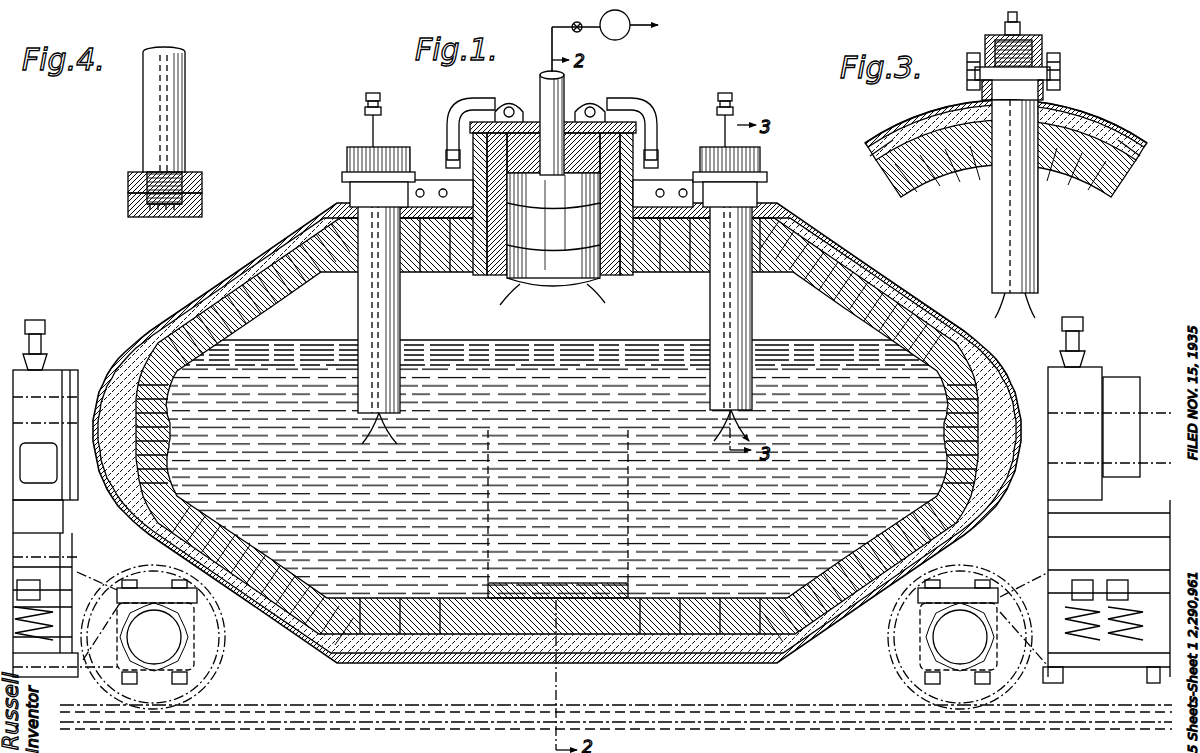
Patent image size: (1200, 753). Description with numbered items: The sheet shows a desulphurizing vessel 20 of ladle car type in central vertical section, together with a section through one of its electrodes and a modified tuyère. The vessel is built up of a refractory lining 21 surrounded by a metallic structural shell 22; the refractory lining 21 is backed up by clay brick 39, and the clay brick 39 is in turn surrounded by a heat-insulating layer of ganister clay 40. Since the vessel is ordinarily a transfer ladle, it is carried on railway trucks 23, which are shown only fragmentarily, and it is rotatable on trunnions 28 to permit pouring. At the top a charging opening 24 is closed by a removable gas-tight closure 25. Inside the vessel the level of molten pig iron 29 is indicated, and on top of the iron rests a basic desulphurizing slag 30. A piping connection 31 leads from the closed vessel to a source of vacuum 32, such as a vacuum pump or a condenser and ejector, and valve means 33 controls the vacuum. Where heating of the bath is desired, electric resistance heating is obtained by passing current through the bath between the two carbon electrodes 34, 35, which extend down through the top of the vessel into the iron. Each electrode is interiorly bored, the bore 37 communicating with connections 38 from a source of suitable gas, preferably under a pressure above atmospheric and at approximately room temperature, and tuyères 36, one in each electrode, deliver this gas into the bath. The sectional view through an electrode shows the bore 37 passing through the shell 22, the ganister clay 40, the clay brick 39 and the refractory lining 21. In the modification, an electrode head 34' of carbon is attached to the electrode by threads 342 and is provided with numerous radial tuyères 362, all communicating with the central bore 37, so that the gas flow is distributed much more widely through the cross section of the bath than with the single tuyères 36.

In FIG. 1, the desulphurizing vessel 20 is at (281, 250).
In FIG. 3, the desulphurizing vessel 20 is at (1088, 126).
In FIG. 1, the refractory lining 21 is at (545, 585).
In FIG. 3, the refractory lining 21 is at (1083, 178).
In FIG. 1, the metallic structural shell 22 is at (151, 343).
In FIG. 3, the metallic structural shell 22 is at (1124, 134).
In FIG. 1, the railway trucks 23 is at (40, 558).
In FIG. 1, the charging opening 24 is at (553, 213).
In FIG. 1, the removable gas-tight closure 25 is at (527, 101).
In FIG. 1, the trunnions 28 is at (42, 385).
In FIG. 1, the level of molten pig iron 29 is at (500, 365).
In FIG. 1, the basic desulphurizing slag 30 is at (596, 342).
In FIG. 1, the piping connection 31 is at (567, 98).
In FIG. 1, the source of vacuum 32 is at (622, 36).
In FIG. 1, the valve means 33 is at (571, 25).
In FIG. 1, the electrode 34 is at (369, 234).
In FIG. 4, the electrode head 34' is at (142, 211).
In FIG. 4, the threads 342 is at (162, 214).
In FIG. 1, the electrode 35 is at (753, 311).
In FIG. 3, the electrode 35 is at (1000, 245).
In FIG. 1, the tuyères 36 is at (374, 419).
In FIG. 3, the tuyères 36 is at (1012, 297).
In FIG. 4, the radial tuyères 362 is at (130, 193).
In FIG. 1, the bore 37 is at (398, 294).
In FIG. 3, the bore 37 is at (1020, 232).
In FIG. 4, the bore 37 is at (168, 106).
In FIG. 1, the connections 38 is at (366, 122).
In FIG. 3, the connections 38 is at (1018, 19).
In FIG. 1, the clay brick 39 is at (412, 190).
In FIG. 3, the clay brick 39 is at (1122, 156).
In FIG. 1, the heat-insulating layer of ganister clay 40 is at (433, 190).
In FIG. 3, the heat-insulating layer of ganister clay 40 is at (1140, 143).